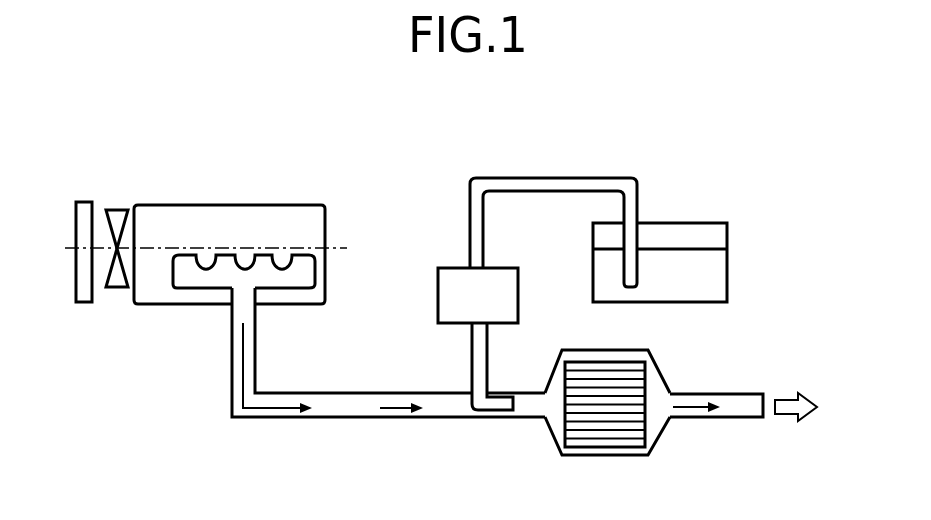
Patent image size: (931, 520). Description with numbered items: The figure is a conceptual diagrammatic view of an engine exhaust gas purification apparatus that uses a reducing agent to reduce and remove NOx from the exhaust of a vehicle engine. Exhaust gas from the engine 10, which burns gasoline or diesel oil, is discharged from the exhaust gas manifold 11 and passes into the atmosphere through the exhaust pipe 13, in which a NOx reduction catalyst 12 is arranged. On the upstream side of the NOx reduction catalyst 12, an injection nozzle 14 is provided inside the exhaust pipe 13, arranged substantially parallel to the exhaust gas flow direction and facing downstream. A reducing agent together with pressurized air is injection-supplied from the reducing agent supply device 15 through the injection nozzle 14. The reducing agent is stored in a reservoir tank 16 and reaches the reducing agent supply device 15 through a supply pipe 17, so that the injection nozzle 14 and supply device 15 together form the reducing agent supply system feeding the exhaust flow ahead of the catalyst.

The engine 10 is at (182, 205).
The exhaust gas manifold 11 is at (316, 272).
The NOx reduction catalyst 12 is at (627, 448).
The exhaust pipe 13 is at (393, 418).
The injection nozzle 14 is at (490, 413).
The reducing agent supply device 15 is at (438, 300).
The reservoir tank 16 is at (728, 284).
The supply pipe 17 is at (468, 230).